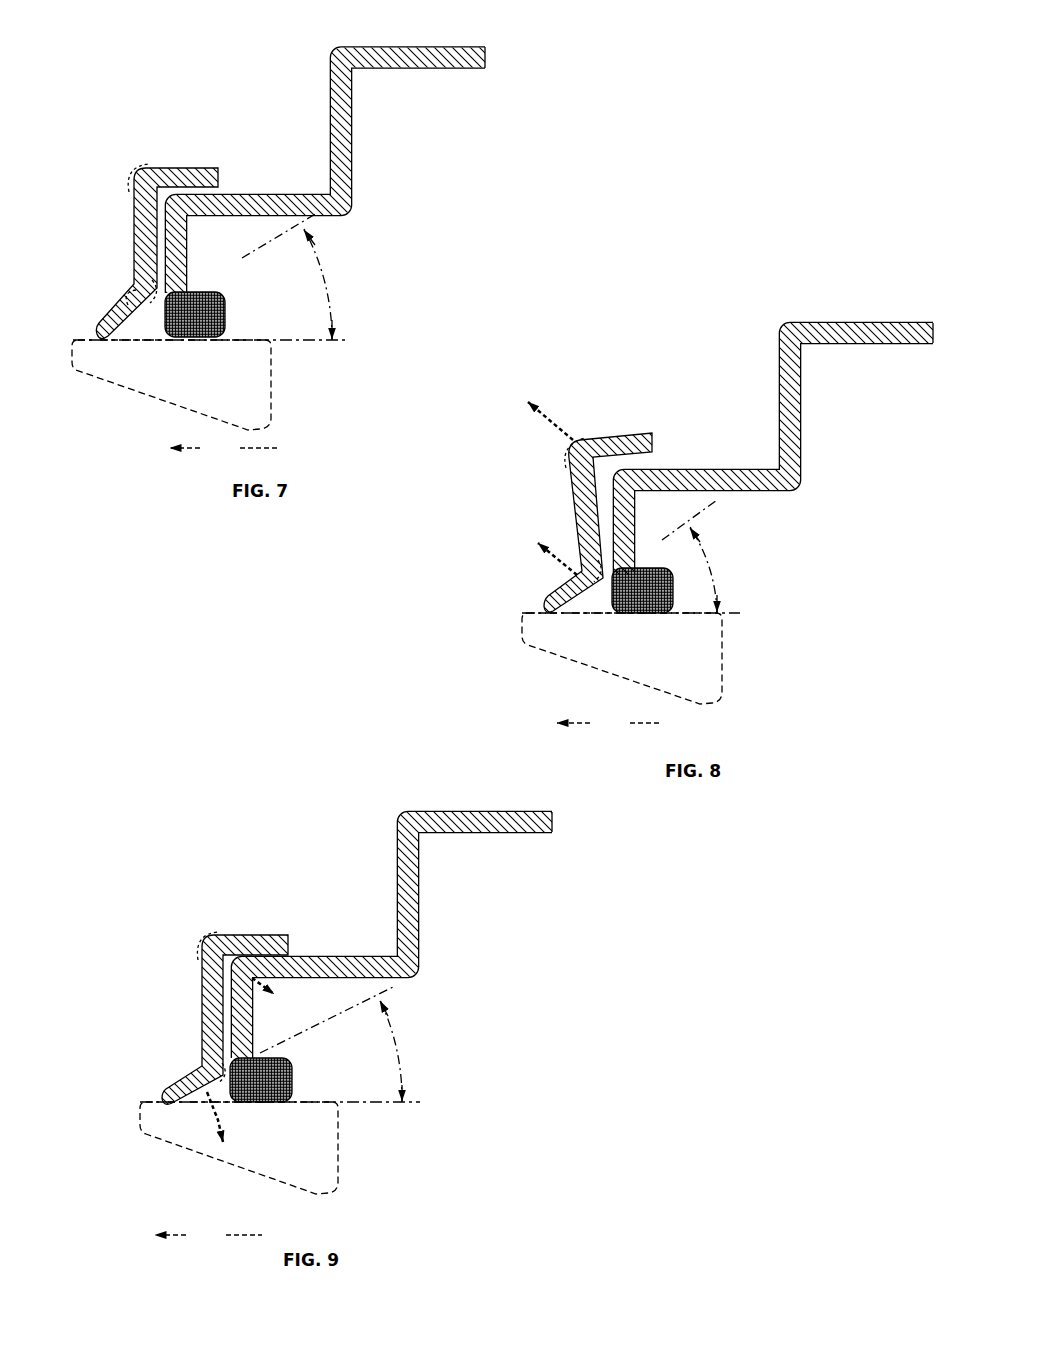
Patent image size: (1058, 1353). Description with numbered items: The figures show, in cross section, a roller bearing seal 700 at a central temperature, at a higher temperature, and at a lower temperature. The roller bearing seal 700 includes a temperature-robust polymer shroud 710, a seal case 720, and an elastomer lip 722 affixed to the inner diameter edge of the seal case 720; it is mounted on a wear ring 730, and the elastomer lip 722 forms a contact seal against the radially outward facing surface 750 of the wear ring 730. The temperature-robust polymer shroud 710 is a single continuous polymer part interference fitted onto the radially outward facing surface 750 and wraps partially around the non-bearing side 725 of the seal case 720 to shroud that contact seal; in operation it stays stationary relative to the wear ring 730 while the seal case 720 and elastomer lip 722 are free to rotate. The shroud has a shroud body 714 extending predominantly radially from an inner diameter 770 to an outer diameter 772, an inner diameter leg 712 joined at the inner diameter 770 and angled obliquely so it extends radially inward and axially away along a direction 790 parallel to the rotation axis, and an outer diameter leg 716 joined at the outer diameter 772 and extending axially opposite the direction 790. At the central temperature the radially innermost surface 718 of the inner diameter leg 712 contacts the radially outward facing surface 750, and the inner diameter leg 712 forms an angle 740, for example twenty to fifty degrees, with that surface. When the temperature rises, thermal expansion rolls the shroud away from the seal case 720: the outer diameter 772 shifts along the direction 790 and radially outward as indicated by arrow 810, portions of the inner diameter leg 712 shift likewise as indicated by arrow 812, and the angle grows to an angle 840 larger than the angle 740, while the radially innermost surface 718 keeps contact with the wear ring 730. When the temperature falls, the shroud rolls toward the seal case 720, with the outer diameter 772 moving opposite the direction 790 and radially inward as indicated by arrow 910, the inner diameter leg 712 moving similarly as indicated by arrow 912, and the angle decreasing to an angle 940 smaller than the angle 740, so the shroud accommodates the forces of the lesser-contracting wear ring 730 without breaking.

In FIG. 7, the roller bearing seal 700 is at (124, 61).
In FIG. 8, the roller bearing seal 700 is at (774, 243).
In FIG. 9, the roller bearing seal 700 is at (179, 721).
In FIG. 7, the temperature-robust polymer shroud 710 is at (124, 156).
In FIG. 8, the temperature-robust polymer shroud 710 is at (609, 415).
In FIG. 9, the temperature-robust polymer shroud 710 is at (236, 905).
In FIG. 7, the inner diameter leg 712 is at (129, 316).
In FIG. 8, the inner diameter leg 712 is at (552, 590).
In FIG. 9, the inner diameter leg 712 is at (170, 1085).
In FIG. 7, the shroud body 714 is at (136, 230).
In FIG. 8, the shroud body 714 is at (572, 480).
In FIG. 9, the shroud body 714 is at (202, 995).
In FIG. 7, the outer diameter leg 716 is at (183, 167).
In FIG. 8, the outer diameter leg 716 is at (648, 440).
In FIG. 9, the outer diameter leg 716 is at (250, 935).
In FIG. 7, the radially innermost surface 718 is at (105, 346).
In FIG. 8, the radially innermost surface 718 is at (552, 619).
In FIG. 9, the radially innermost surface 718 is at (172, 1108).
In FIG. 7, the seal case 720 is at (263, 195).
In FIG. 8, the seal case 720 is at (733, 468).
In FIG. 9, the seal case 720 is at (343, 957).
In FIG. 7, the elastomer lip 722 is at (214, 328).
In FIG. 8, the elastomer lip 722 is at (660, 605).
In FIG. 9, the elastomer lip 722 is at (277, 1093).
In FIG. 7, the non-bearing side 725 is at (200, 183).
In FIG. 8, the non-bearing side 725 is at (662, 465).
In FIG. 9, the non-bearing side 725 is at (266, 954).
In FIG. 7, the wear ring 730 is at (266, 394).
In FIG. 8, the wear ring 730 is at (714, 666).
In FIG. 9, the wear ring 730 is at (332, 1158).
In FIG. 7, the angle 740 is at (293, 276).
In FIG. 7, the radially outward facing surface 750 is at (234, 335).
In FIG. 8, the radially outward facing surface 750 is at (538, 609).
In FIG. 9, the radially outward facing surface 750 is at (302, 1097).
In FIG. 7, the inner diameter 770 is at (148, 330).
In FIG. 7, the outer diameter 772 is at (141, 165).
In FIG. 8, the outer diameter 772 is at (566, 455).
In FIG. 9, the outer diameter 772 is at (200, 950).
In FIG. 7, the direction 790 is at (225, 449).
In FIG. 8, the direction 790 is at (609, 724).
In FIG. 9, the direction 790 is at (208, 1236).
In FIG. 8, the arrow 810 is at (556, 420).
In FIG. 8, the arrow 812 is at (531, 536).
In FIG. 8, the angle 840 is at (692, 556).
In FIG. 9, the arrow 910 is at (274, 984).
In FIG. 9, the arrow 912 is at (240, 1122).
In FIG. 9, the angle 940 is at (334, 1044).